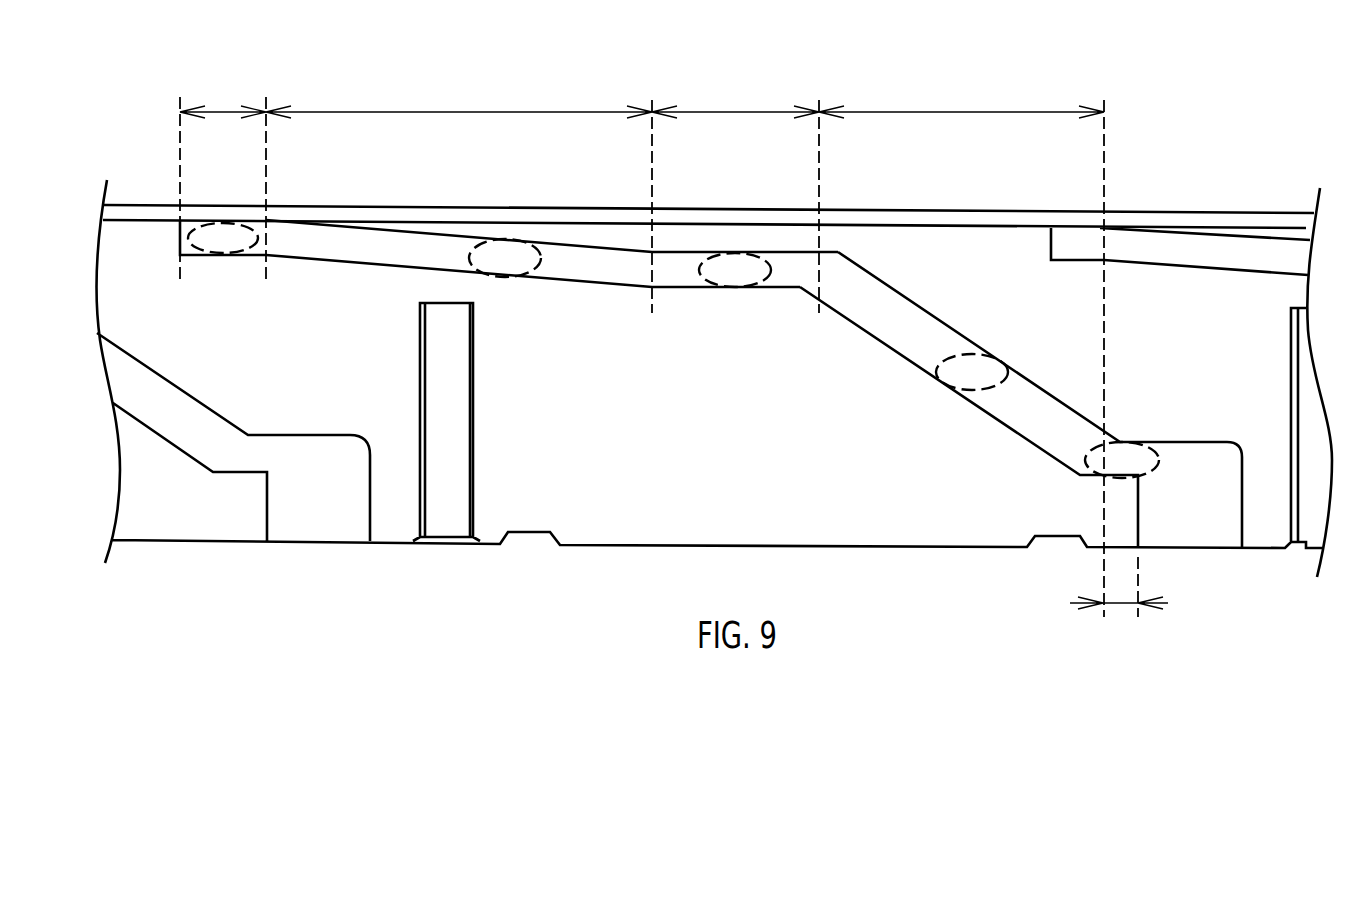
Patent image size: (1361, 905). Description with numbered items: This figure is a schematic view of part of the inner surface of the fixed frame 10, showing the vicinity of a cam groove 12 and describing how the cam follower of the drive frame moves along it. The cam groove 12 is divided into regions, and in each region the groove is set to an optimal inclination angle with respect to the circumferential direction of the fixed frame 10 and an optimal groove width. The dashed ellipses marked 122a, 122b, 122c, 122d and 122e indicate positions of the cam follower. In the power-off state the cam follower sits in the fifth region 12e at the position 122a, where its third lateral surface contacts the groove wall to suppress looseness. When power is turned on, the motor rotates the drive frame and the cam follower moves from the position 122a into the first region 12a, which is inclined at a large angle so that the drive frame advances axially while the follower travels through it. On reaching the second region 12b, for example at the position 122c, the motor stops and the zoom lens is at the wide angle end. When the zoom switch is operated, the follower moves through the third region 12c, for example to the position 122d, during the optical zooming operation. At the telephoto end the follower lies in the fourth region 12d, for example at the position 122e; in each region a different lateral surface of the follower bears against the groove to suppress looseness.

The fixed frame 10 is at (1192, 105).
The cam groove 12 is at (1242, 508).
The first region 12a is at (955, 112).
The second region 12b is at (736, 110).
The third region 12c is at (445, 110).
The fourth region 12d is at (223, 108).
The fifth region 12e is at (1120, 606).
The position of the cam follower in the fifth region 122a is at (1085, 476).
The position of the cam follower 122b is at (969, 358).
The position of the cam follower in the second region 122c is at (736, 258).
The position of the cam follower in the third region 122d is at (506, 246).
The position of the cam follower in the fourth region 122e is at (224, 228).